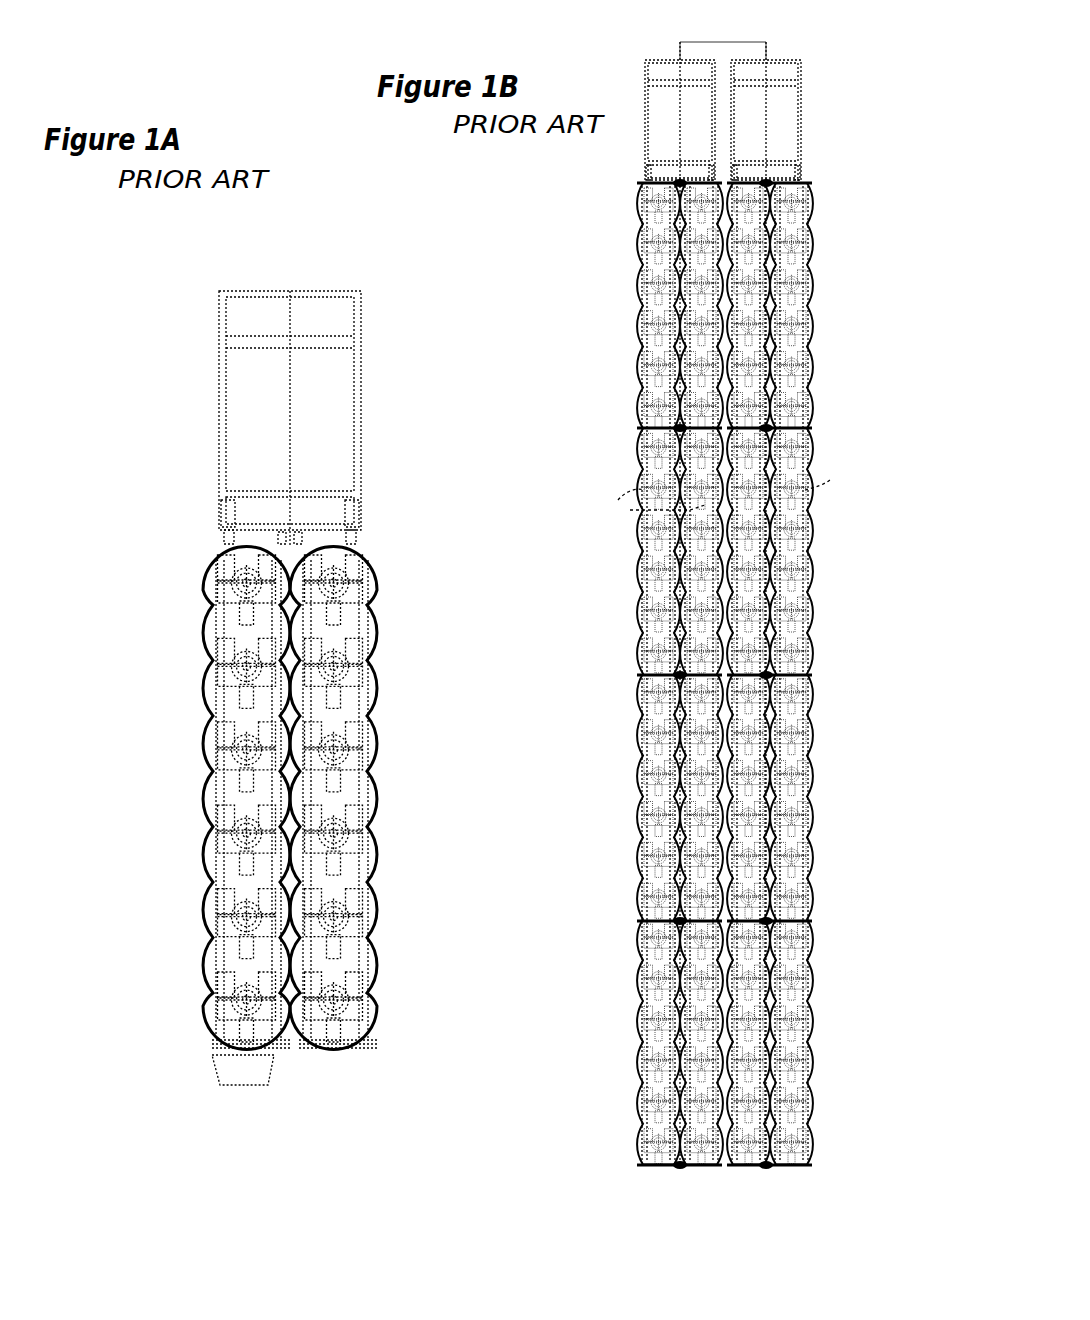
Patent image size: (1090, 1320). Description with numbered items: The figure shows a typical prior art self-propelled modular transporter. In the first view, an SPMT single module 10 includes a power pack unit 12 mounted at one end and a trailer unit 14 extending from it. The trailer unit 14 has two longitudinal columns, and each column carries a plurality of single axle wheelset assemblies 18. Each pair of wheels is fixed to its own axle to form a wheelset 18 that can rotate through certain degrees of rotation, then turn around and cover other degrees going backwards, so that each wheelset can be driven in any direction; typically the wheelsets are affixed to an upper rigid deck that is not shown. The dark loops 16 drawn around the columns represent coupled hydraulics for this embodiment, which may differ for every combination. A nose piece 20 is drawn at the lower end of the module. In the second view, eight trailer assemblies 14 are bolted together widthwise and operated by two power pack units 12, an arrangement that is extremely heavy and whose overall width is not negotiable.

In FIG. 1A, the SPMT single module 10 is at (185, 237).
In FIG. 1A, the power pack unit 12 is at (190, 297).
In FIG. 1B, the power pack unit 12 is at (628, 161).
In FIG. 1A, the trailer unit 14 is at (190, 545).
In FIG. 1B, the trailer unit 14 is at (690, 1003).
In FIG. 1A, the dark loops 16 is at (363, 537).
In FIG. 1A, the single axle wheelset assembly 18 is at (342, 636).
In FIG. 1A, the nose / bottom connector 20 is at (243, 1088).